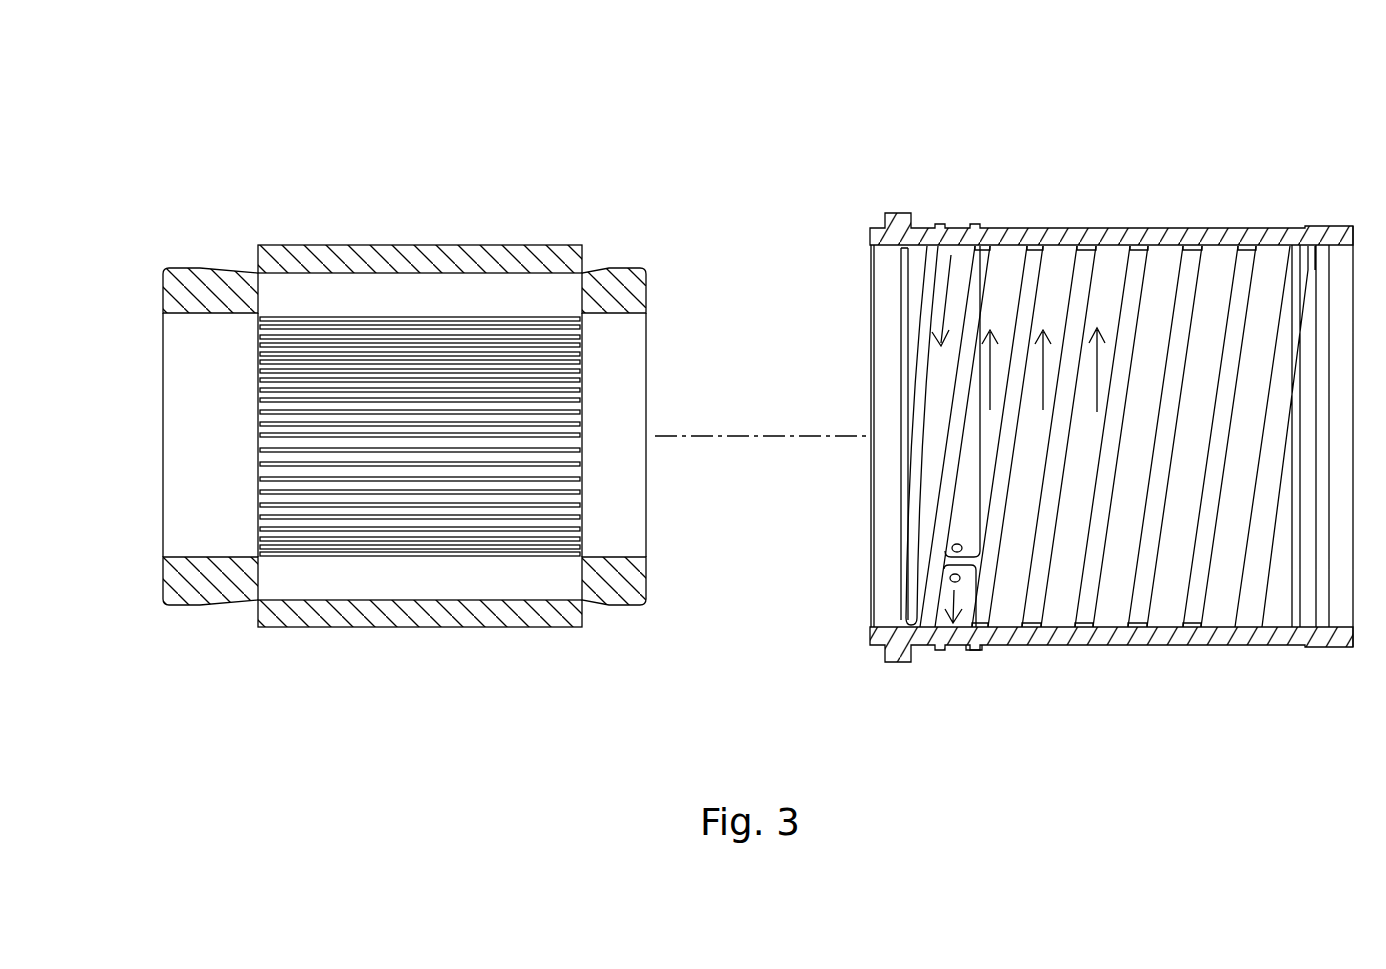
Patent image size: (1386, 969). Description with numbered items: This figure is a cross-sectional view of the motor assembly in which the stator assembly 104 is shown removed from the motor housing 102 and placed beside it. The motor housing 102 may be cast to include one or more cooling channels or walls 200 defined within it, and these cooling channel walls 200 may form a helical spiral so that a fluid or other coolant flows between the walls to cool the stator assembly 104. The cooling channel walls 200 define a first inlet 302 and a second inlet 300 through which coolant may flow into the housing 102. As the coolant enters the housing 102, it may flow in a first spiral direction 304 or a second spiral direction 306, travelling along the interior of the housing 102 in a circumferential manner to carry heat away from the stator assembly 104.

The stator assembly 104 is at (388, 207).
The motor housing 102 is at (1122, 198).
The cooling channel walls 200 is at (1117, 600).
The second spiral direction 306 is at (985, 385).
The first inlet 302 is at (950, 548).
The second inlet 300 is at (950, 578).
The first spiral direction 304 is at (975, 643).